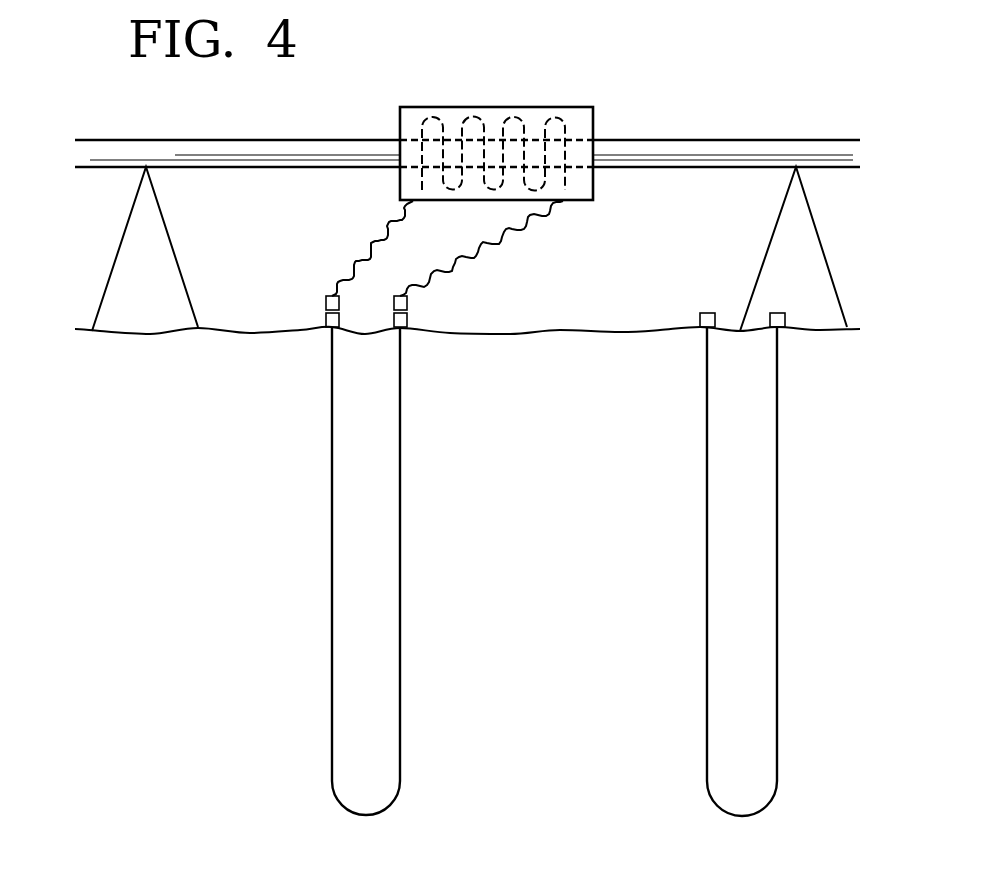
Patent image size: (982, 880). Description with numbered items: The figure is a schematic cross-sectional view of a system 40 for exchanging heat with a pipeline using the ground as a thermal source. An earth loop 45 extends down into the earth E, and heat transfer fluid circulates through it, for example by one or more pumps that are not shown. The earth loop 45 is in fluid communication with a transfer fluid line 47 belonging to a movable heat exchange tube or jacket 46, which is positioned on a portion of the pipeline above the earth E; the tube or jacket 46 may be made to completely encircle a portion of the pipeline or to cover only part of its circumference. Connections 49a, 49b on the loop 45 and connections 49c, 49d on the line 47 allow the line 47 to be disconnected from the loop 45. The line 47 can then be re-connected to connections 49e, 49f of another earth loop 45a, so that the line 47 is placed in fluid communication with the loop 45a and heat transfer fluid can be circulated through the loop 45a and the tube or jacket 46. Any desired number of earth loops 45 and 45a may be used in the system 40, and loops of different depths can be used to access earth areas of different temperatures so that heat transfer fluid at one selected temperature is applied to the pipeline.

The system 40 is at (624, 98).
The earth loop 45 is at (400, 539).
The another earth loop 45a is at (707, 535).
The movable heat exchange tube or jacket 46 is at (428, 106).
The transfer fluid line 47 is at (502, 243).
The connection 49a is at (326, 318).
The connection 49b is at (408, 322).
The connection 49c is at (326, 305).
The connection 49d is at (408, 302).
The connection 49e is at (700, 321).
The connection 49f is at (785, 319).
The earth E is at (625, 416).